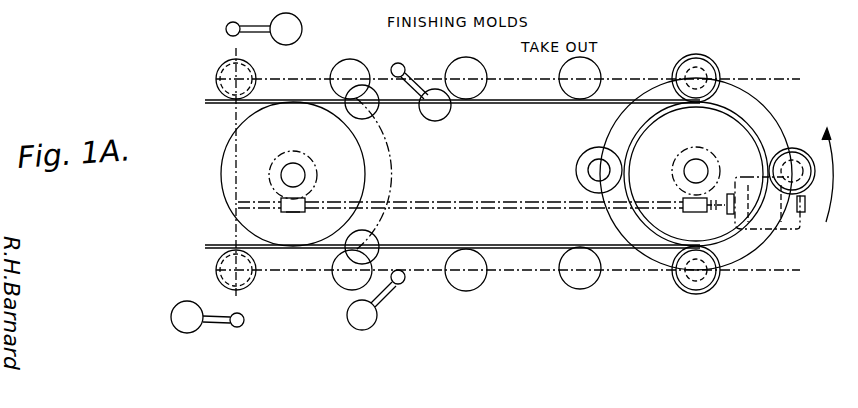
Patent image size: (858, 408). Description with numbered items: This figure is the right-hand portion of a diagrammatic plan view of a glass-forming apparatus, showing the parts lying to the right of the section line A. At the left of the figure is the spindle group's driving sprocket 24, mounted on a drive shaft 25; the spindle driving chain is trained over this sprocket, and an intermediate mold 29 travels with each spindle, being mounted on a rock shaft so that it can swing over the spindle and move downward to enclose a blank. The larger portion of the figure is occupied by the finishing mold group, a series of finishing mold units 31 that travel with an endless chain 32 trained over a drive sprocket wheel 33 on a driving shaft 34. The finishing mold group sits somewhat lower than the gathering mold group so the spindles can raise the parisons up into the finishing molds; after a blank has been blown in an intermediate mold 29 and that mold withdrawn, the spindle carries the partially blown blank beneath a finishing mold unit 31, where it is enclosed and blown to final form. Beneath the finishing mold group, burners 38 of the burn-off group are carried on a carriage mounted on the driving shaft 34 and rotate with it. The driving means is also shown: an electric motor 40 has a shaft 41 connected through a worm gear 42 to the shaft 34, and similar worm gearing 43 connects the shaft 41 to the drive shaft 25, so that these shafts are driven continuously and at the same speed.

The driving sprocket 24 is at (228, 142).
The drive shaft 25 is at (296, 177).
The intermediate mold 29 is at (300, 30).
The finishing mold unit 31 is at (486, 52).
The endless chain 32 is at (545, 102).
The drive sprocket wheel 33 is at (707, 174).
The driving shaft 34 is at (692, 171).
The burner 38 is at (570, 168).
The electric motor 40 is at (776, 226).
The motor shaft 41 is at (442, 202).
The worm gear 42 is at (690, 213).
The bracket 43 is at (288, 213).
The section line A is at (236, 228).